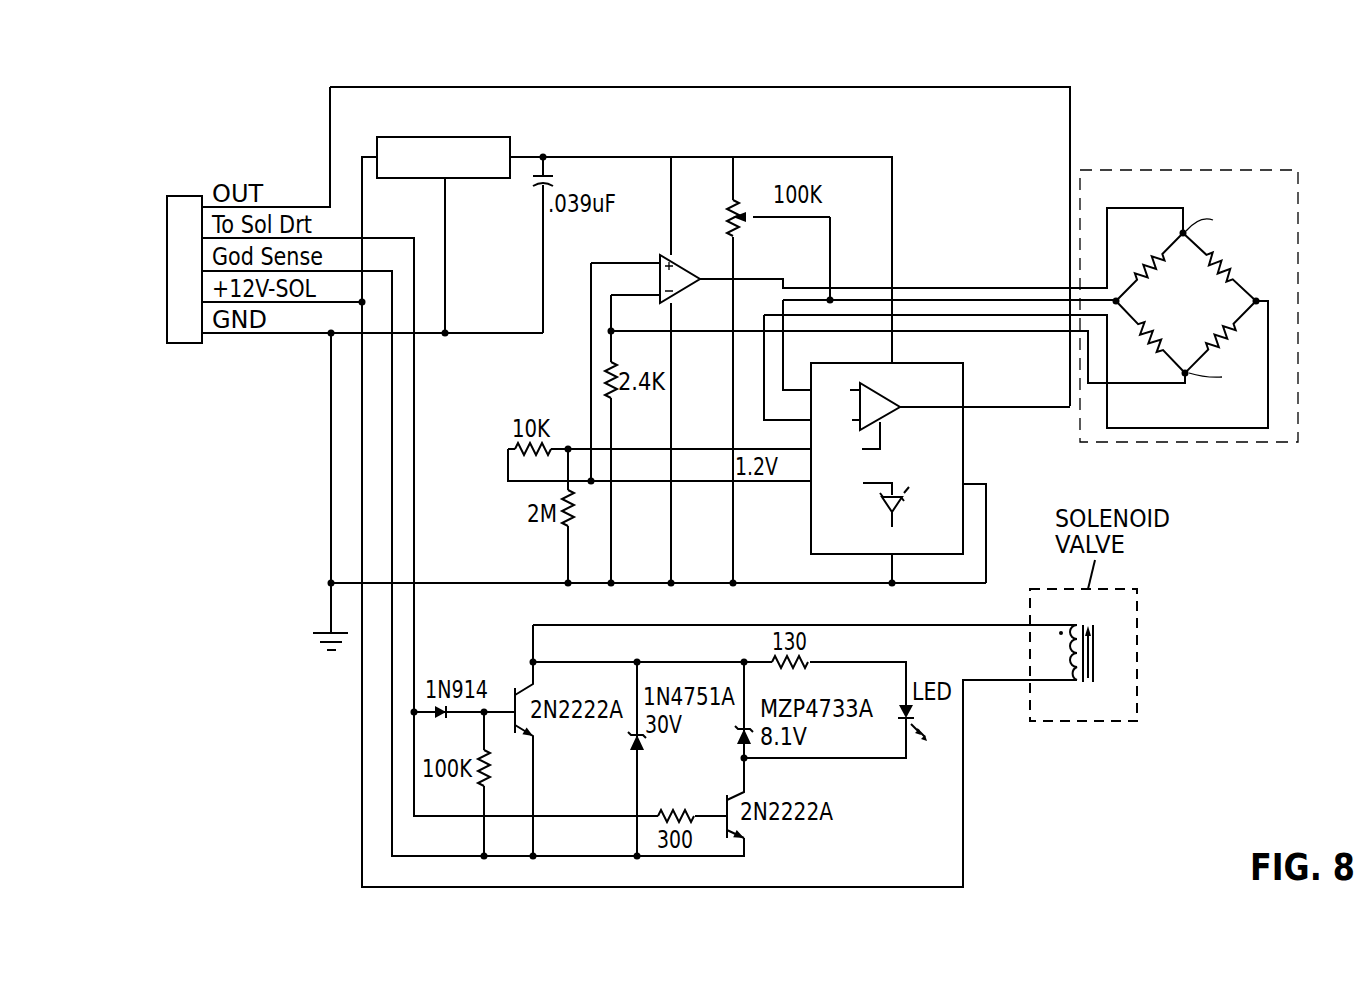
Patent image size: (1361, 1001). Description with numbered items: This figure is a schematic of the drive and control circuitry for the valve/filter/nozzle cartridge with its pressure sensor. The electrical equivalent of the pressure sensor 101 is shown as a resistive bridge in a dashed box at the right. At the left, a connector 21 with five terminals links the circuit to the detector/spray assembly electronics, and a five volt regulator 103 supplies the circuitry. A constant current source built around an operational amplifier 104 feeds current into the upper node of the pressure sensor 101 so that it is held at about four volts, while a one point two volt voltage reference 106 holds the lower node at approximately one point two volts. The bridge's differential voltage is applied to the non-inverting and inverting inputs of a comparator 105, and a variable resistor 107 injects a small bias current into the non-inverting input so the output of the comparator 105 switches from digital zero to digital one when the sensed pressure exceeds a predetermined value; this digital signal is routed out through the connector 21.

The connector 21 is at (191, 343).
The pressure sensor 101 is at (1173, 170).
The 5 volt regulator 103 is at (500, 135).
The operational amplifier 104 is at (683, 292).
The comparator 105 is at (880, 407).
The 1.2 volt voltage reference 106 is at (877, 503).
The variable resistor 107 is at (733, 203).